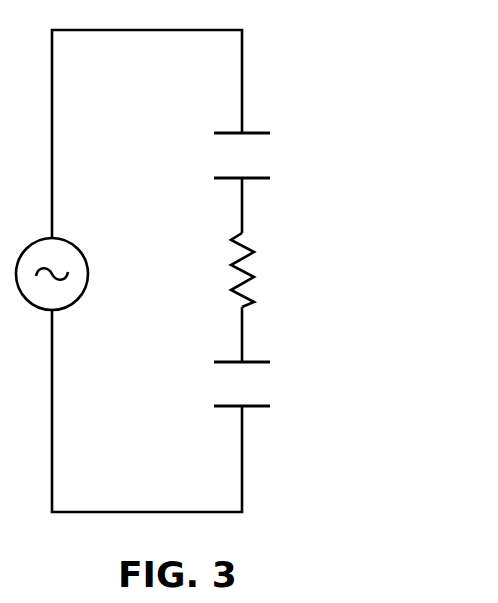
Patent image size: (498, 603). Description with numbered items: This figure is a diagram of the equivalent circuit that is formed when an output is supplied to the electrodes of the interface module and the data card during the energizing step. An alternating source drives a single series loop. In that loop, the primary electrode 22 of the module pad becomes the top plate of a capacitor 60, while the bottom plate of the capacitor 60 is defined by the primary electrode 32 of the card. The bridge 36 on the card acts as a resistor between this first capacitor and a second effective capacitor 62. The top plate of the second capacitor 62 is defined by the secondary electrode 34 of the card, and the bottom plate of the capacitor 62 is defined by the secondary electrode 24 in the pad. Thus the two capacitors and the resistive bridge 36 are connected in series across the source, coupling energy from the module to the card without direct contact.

The primary electrode 22 is at (268, 126).
The primary electrode 32 is at (268, 186).
The capacitor 60 is at (312, 156).
The bridge 36 is at (266, 270).
The secondary electrode 34 is at (268, 355).
The secondary electrode 24 is at (268, 414).
The second effective capacitor 62 is at (312, 383).